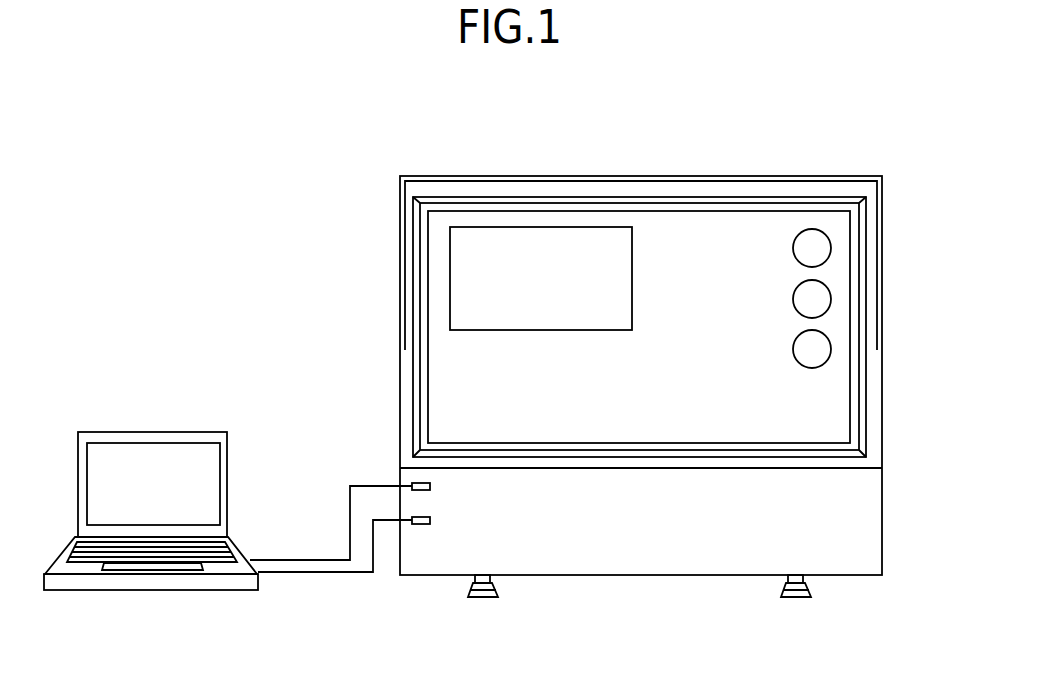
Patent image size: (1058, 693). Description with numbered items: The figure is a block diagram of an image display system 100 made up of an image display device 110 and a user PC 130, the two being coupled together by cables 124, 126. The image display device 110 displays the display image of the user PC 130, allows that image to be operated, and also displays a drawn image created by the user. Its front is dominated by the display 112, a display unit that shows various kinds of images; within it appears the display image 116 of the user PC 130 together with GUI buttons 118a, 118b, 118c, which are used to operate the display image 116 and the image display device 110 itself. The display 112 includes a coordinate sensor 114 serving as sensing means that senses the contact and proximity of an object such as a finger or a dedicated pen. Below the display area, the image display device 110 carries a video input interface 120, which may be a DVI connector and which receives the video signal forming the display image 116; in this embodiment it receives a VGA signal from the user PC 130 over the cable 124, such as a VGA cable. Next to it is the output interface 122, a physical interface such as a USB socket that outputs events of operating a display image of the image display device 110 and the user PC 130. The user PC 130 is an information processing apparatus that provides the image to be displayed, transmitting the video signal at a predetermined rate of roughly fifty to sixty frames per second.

The image display system 100 is at (901, 98).
The image display device 110 is at (664, 176).
The display 112 is at (758, 208).
The coordinate sensor 114 is at (539, 210).
The display image 116 is at (632, 278).
The GUI button 118a is at (831, 246).
The GUI button 118b is at (831, 297).
The GUI button 118c is at (831, 347).
The video input interface 120 is at (432, 487).
The output interface 122 is at (432, 520).
The cable 124 is at (305, 558).
The cable 126 is at (312, 574).
The user PC 130 is at (185, 432).